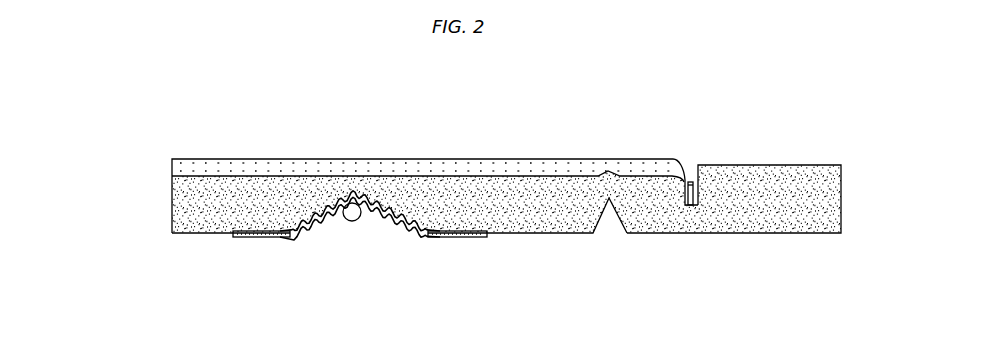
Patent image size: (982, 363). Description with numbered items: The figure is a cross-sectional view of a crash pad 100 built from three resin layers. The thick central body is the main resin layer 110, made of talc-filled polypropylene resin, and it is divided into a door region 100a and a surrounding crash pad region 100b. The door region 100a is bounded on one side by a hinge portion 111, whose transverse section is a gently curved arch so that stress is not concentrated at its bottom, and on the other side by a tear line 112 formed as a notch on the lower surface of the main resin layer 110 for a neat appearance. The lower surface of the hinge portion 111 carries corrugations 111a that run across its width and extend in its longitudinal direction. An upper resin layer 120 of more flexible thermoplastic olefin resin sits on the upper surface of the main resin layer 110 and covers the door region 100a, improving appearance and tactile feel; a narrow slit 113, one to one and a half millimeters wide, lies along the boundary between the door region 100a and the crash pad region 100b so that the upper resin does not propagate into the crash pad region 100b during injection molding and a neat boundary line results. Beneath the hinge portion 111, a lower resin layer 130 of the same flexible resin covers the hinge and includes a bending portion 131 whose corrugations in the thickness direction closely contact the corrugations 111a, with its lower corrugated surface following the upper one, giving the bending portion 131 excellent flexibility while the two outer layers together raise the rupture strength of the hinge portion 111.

The crash pad 100 is at (766, 164).
The door region 100a is at (522, 199).
The crash pad region 100b is at (779, 214).
The main resin layer 110 is at (210, 205).
The hinge portion 111 is at (367, 230).
The corrugations 111a is at (317, 207).
The tear line 112 is at (607, 228).
The slit 113 is at (688, 180).
The upper resin layer 120 is at (422, 166).
The lower resin layer 130 is at (455, 240).
The bending portion 131 is at (340, 200).